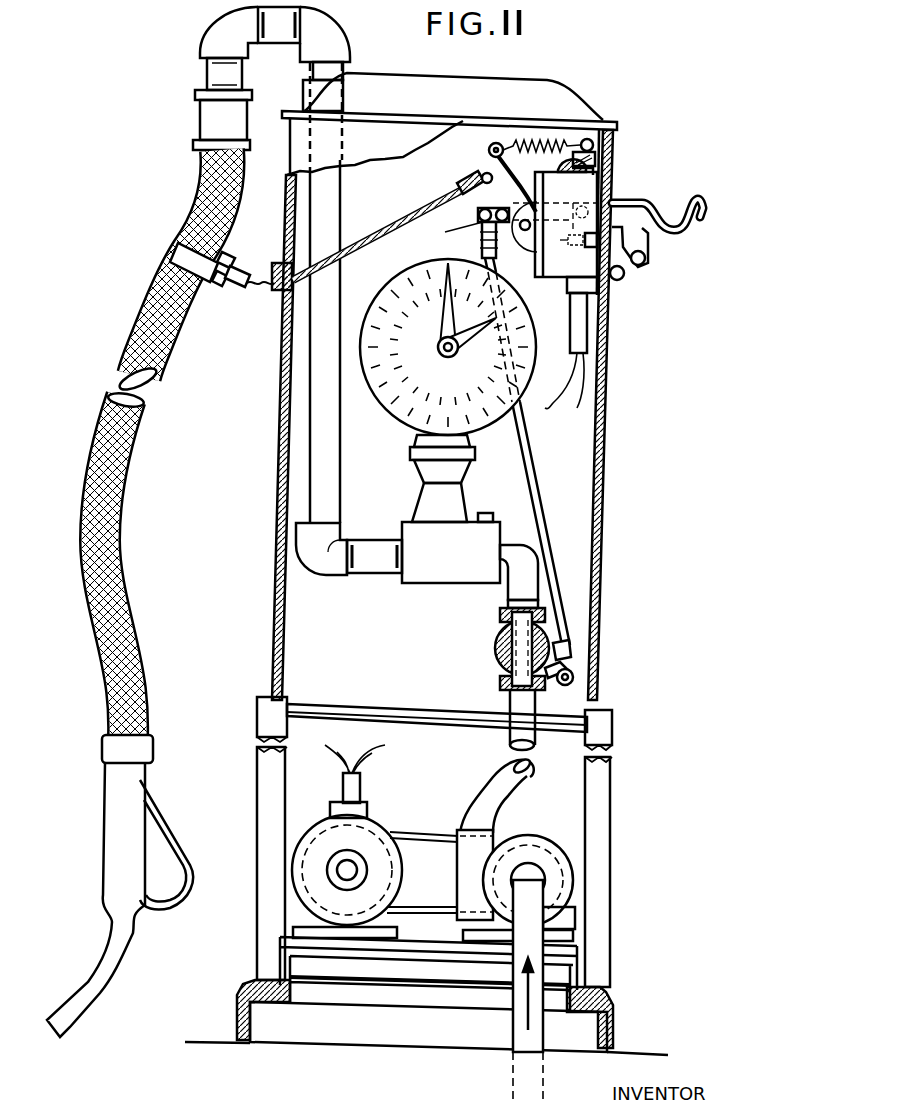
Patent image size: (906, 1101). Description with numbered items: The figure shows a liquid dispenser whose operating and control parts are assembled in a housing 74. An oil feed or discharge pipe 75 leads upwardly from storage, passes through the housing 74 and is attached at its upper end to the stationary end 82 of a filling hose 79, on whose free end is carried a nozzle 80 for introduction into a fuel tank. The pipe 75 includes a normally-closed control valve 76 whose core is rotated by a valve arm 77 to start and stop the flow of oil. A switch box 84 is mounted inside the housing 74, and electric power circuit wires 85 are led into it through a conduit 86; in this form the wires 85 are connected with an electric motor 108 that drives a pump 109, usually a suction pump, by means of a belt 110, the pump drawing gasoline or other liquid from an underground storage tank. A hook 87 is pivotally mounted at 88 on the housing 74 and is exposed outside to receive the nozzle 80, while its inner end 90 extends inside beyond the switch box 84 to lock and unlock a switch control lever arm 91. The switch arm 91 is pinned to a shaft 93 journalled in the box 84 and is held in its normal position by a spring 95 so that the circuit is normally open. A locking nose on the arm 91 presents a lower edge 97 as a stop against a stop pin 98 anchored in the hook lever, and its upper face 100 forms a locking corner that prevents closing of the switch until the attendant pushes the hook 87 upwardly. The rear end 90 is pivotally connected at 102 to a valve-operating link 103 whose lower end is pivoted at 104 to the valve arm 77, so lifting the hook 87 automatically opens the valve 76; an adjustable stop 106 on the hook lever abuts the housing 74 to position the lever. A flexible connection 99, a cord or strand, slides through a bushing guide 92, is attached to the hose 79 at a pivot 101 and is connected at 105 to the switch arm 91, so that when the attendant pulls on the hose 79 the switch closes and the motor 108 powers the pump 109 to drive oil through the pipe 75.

The housing 74 is at (383, 82).
The oil feed or discharge pipe 75 is at (281, 37).
The control valve core 76 is at (495, 653).
The valve arm 77 is at (562, 684).
The filling hose 79 is at (208, 203).
The nozzle 80 is at (118, 838).
The upper stationary end of filling hose 82 is at (252, 146).
The switch box 84 is at (555, 275).
The electric power circuit wires 85 is at (585, 160).
The conduit 86 is at (590, 170).
The hook 87 is at (686, 224).
The hook pivot 88 is at (586, 208).
The inner end of hook lever 90 is at (556, 165).
The switch control lever arm 91 is at (491, 148).
The bushing guide 92 is at (290, 262).
The shaft 93 is at (523, 232).
The spring 95 is at (545, 150).
The lower edge of locking nose 97 is at (488, 240).
The stop pin 98 is at (480, 224).
The flexible connection 99 is at (380, 232).
The upper face of locking nose 100 is at (434, 204).
The hose pivot 101 is at (213, 292).
The pivot connection 102 is at (480, 216).
The valve-operating link 103 is at (535, 472).
The link pivot 104 is at (575, 675).
The cable connection to switch arm 105 is at (484, 173).
The adjustable stop 106 is at (592, 247).
The electric motor 108 is at (360, 843).
The pump 109 is at (540, 843).
The belt 110 is at (432, 840).